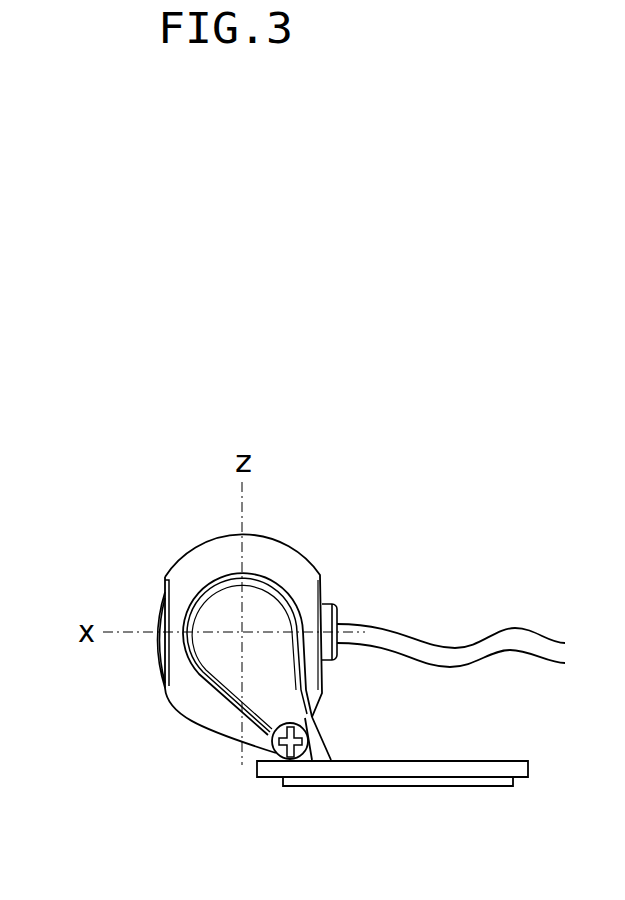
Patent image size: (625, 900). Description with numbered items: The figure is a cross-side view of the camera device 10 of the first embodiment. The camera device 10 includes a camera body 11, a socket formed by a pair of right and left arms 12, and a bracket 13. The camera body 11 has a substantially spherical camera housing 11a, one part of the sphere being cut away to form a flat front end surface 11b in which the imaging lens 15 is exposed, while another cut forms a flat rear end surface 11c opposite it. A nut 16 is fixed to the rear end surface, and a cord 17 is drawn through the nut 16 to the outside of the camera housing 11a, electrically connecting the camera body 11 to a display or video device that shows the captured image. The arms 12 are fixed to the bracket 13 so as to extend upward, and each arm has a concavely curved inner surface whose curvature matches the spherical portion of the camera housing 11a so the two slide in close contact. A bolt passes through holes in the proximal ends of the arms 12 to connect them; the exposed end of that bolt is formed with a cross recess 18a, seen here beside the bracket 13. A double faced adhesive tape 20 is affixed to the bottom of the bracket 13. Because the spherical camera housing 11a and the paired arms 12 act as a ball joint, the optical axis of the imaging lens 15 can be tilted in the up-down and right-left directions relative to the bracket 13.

The camera device 10 is at (116, 534).
The camera body 11 is at (185, 557).
The camera housing 11a is at (280, 562).
The front end surface 11b is at (155, 585).
The rear wall of housing 11c is at (325, 587).
The arm 12 is at (217, 652).
The bracket 13 is at (507, 770).
The imaging lens 15 is at (153, 652).
The nut 16 is at (337, 608).
The cord 17 is at (513, 640).
The cross recess 18a is at (310, 762).
The double faced adhesive tape 20 is at (488, 787).